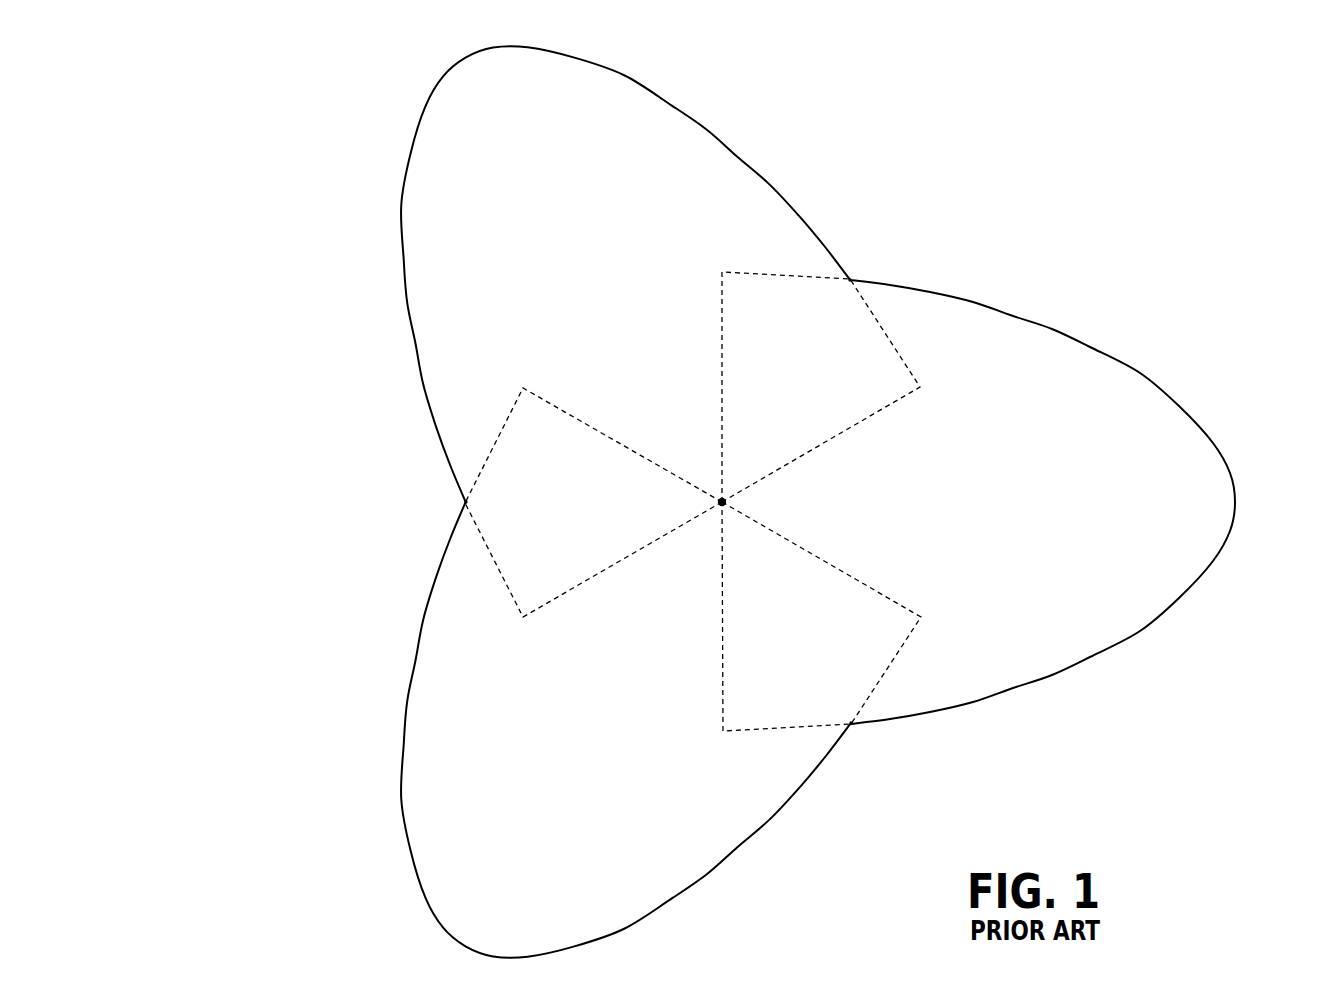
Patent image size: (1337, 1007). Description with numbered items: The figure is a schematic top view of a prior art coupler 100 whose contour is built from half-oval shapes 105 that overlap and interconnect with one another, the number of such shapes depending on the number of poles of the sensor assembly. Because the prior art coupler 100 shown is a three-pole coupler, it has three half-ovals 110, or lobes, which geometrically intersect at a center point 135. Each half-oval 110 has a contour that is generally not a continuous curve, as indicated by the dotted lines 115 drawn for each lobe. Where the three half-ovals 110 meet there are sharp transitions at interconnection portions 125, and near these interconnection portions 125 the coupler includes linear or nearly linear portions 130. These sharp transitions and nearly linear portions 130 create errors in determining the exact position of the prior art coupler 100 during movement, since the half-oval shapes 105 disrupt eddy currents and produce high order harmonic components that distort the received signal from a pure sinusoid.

The prior art coupler 100 is at (190, 103).
The half-oval shapes 105 is at (1188, 253).
The half-ovals 110 is at (399, 258).
The dotted lines 115 is at (722, 330).
The interconnection portions 125 is at (850, 280).
The linear or nearly linear portions 130 is at (797, 210).
The center point 135 is at (727, 501).